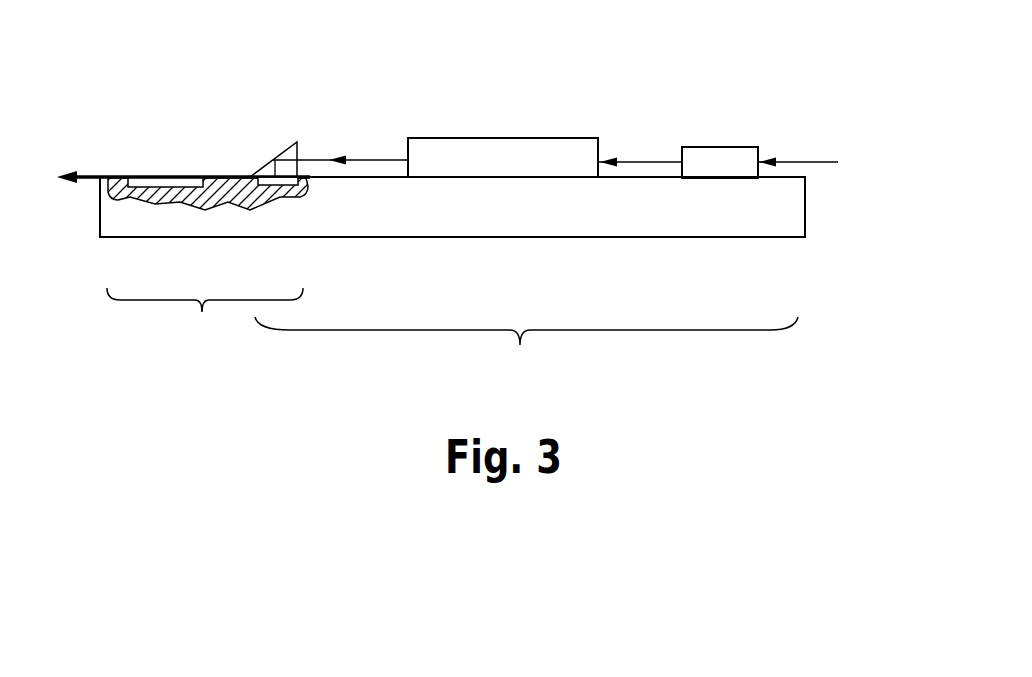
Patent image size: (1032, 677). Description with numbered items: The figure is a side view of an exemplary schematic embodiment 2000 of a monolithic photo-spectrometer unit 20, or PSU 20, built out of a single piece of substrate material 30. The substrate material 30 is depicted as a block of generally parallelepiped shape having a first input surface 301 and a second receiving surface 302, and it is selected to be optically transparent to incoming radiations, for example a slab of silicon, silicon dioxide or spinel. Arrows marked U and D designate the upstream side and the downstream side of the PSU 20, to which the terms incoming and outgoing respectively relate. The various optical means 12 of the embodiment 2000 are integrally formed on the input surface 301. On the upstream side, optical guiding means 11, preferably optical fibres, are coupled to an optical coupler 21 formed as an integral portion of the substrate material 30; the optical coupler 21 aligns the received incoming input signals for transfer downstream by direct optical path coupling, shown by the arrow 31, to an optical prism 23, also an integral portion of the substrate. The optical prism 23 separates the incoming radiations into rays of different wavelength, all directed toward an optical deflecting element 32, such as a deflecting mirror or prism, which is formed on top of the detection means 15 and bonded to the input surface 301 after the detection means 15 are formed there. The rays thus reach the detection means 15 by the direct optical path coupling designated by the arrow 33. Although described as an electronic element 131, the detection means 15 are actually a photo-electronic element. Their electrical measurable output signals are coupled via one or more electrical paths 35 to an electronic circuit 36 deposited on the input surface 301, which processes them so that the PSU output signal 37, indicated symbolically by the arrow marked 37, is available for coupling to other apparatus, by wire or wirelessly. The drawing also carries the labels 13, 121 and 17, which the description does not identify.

The exemplary schematic embodiment 2000 is at (793, 64).
The upstream side arrow U is at (824, 89).
The downstream side arrow D is at (97, 101).
The optical guiding means 11 is at (820, 162).
The optical means 12 is at (530, 263).
The first surface portion 121 is at (530, 263).
The second region (recess) 13 is at (207, 276).
The electronic element 131 is at (207, 276).
The detection means 15 is at (273, 197).
The end portion of waveguide 17 is at (83, 186).
The monolithic photo-spectrometer unit 20 is at (713, 96).
The optical coupler 21 is at (721, 147).
The optical prism 23 is at (515, 138).
The substrate material 30 is at (707, 227).
The first input surface 301 is at (789, 183).
The second receiving surface 302 is at (784, 241).
The arrow 31 is at (643, 162).
The optical deflecting element 32 is at (288, 143).
The arrow 33 is at (373, 160).
The electrical paths 35 is at (240, 177).
The electronic circuit 36 is at (160, 177).
The PSU output signal 37 is at (94, 176).